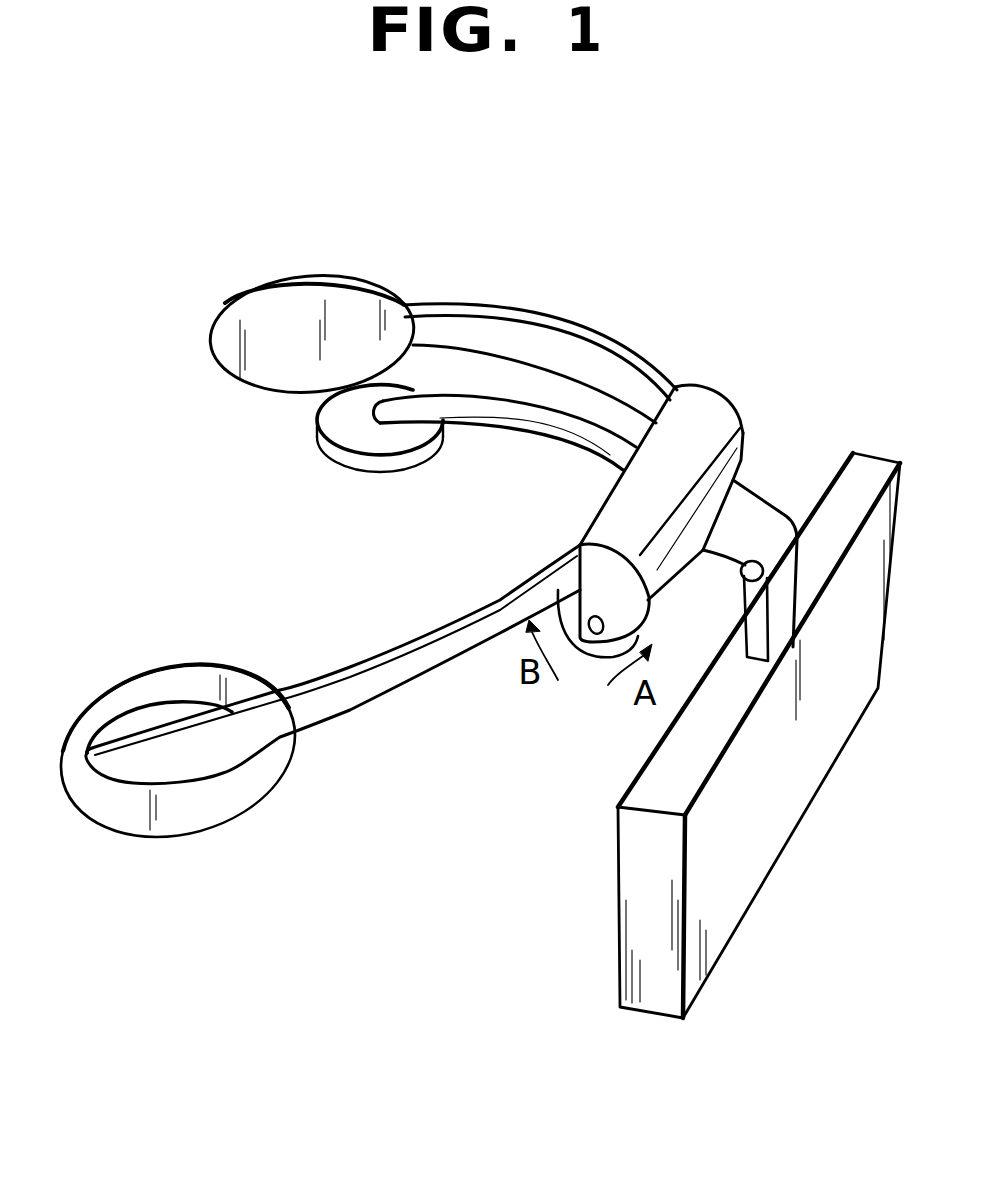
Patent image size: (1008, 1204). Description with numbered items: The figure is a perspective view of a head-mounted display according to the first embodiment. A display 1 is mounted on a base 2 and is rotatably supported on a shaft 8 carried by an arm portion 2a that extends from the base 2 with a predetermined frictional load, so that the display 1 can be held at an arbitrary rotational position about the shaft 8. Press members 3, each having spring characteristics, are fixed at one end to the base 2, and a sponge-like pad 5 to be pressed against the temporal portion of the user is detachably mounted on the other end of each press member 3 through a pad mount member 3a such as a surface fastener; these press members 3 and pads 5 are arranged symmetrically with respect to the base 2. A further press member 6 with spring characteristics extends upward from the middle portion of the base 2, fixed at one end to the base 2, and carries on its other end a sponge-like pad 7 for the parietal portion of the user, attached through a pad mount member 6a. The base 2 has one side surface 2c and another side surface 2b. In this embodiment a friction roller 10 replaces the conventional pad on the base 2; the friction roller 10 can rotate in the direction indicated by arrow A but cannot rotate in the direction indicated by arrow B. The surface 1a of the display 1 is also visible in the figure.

The display 1 is at (868, 605).
The top surface of base 1a is at (777, 617).
The base 2 is at (713, 433).
The arm portion 2a is at (748, 520).
The other side surface 2b is at (600, 570).
The one side surface 2c is at (700, 400).
The press member 3 is at (570, 347).
The pad mount member 3a is at (150, 722).
The sponge-like pad 5 is at (316, 308).
The press member 6 is at (522, 415).
The pad mount member 6a is at (340, 431).
The sponge-like pad 7 is at (373, 463).
The shaft 8 is at (745, 575).
The friction roller 10 is at (590, 652).